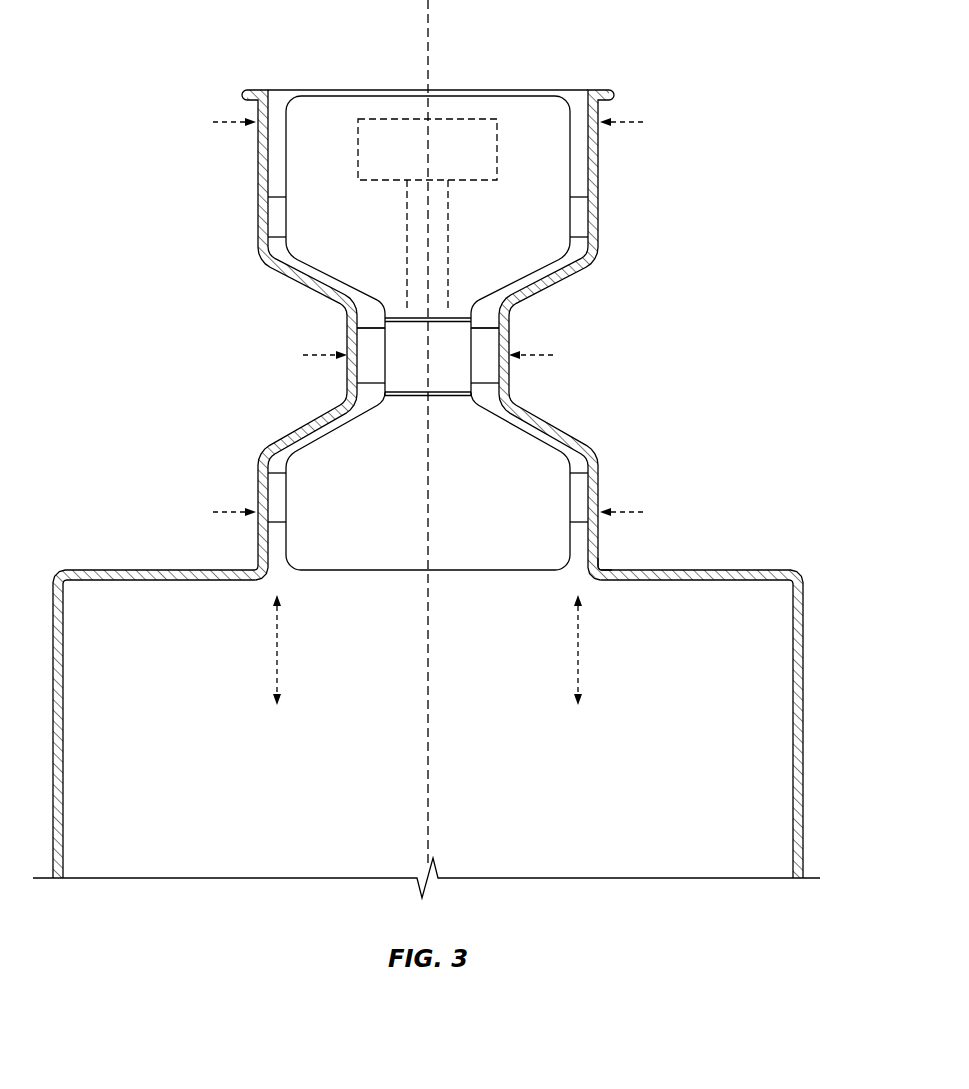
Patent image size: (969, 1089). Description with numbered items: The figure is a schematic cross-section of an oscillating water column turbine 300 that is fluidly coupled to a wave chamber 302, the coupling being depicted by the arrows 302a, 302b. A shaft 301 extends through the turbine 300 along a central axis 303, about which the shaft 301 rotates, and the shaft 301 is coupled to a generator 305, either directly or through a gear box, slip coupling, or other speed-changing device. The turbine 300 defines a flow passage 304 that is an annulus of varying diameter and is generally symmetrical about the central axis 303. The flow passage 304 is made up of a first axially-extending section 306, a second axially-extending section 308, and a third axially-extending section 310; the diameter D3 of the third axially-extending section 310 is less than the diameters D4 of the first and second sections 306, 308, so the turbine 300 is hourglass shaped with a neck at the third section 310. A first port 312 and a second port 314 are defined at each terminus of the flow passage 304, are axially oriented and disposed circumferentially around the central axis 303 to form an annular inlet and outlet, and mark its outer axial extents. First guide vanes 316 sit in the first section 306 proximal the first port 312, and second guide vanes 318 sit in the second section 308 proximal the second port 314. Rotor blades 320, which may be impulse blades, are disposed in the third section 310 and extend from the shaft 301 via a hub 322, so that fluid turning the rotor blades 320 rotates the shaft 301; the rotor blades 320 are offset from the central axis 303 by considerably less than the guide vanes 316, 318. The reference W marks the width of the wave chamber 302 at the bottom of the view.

The oscillating water column turbine 300 is at (127, 48).
The shaft 301 is at (448, 213).
The wave chamber 302 is at (630, 805).
The arrow 302a is at (577, 648).
The arrow 302b is at (276, 648).
The central axis 303 is at (427, 48).
The flow passage 304 is at (580, 184).
The generator 305 is at (497, 149).
The first axially-extending section 306 is at (302, 449).
The second axially-extending section 308 is at (276, 171).
The third axially-extending section 310 is at (485, 311).
The first port 312 is at (582, 572).
The second port 314 is at (578, 88).
The first guide vanes 316 is at (578, 498).
The second guide vanes 318 is at (578, 215).
The rotor blades 320 is at (485, 360).
The hub 322 is at (400, 356).
The diameter of the third axially-extending section D3 is at (312, 352).
The diameters of the first and second axially-extending sections D4 is at (222, 118).
The panel width reference line W is at (200, 878).